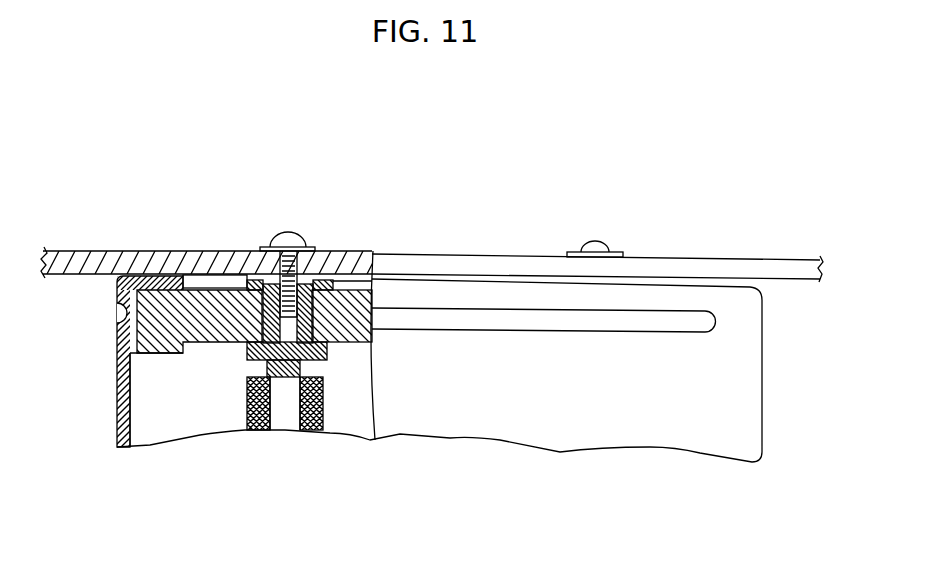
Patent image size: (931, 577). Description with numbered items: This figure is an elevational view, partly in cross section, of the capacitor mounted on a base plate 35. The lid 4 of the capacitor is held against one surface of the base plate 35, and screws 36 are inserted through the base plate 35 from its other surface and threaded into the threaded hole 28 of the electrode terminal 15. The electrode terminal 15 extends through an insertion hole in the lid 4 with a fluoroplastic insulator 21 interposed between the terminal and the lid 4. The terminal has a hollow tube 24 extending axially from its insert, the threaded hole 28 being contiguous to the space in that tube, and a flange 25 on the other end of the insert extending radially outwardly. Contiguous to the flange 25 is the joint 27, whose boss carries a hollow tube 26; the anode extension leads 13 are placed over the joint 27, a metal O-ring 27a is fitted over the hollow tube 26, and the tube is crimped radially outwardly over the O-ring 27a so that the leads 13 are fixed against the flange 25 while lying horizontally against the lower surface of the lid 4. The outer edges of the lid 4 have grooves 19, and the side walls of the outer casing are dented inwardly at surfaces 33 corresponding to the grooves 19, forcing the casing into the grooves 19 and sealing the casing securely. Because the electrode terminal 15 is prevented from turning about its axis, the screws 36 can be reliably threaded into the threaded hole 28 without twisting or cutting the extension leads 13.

The lid 4 is at (168, 300).
The anode extension leads 13 is at (298, 402).
The electrode terminal 15 is at (378, 256).
The grooves 19 is at (125, 322).
The insulators 21 is at (333, 345).
The hollow tube 24 is at (246, 280).
The flange 25 is at (245, 352).
The hollow tube 26 is at (288, 385).
The joint 27 is at (328, 405).
The O-ring 27a is at (333, 370).
The threaded hole 28 is at (264, 275).
The dented surfaces 33 is at (117, 313).
The base plate 35 is at (700, 258).
The screws 36 is at (288, 237).